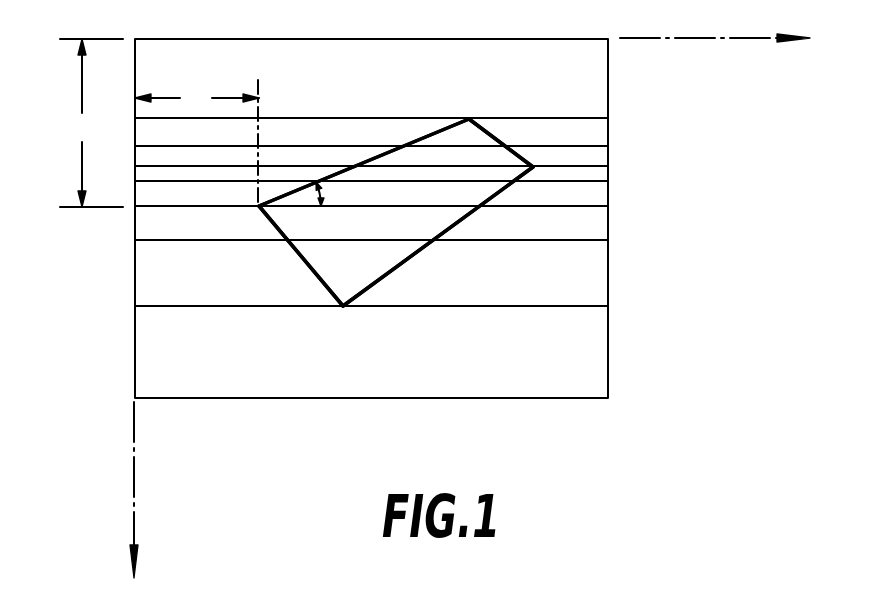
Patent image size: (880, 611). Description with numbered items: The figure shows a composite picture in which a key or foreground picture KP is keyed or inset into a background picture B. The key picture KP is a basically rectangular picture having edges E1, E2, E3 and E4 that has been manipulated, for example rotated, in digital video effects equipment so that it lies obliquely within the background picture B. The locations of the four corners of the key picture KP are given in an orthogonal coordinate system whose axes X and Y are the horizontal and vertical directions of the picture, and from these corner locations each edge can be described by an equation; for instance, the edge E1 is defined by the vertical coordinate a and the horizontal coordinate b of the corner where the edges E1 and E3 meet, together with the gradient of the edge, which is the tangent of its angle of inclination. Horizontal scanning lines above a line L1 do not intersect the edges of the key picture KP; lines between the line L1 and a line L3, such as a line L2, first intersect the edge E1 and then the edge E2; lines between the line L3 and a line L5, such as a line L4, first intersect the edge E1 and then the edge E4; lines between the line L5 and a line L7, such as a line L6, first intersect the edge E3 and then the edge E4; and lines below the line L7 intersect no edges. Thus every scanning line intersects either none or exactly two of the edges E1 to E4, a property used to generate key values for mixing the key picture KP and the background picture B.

The background picture B is at (431, 368).
The line L1 is at (582, 117).
The line L2 is at (573, 145).
The line L3 is at (587, 165).
The line L4 is at (578, 181).
The line L5 is at (573, 207).
The line L6 is at (557, 241).
The line L7 is at (553, 306).
The key picture KP is at (365, 277).
The edge E1 is at (413, 142).
The edge E2 is at (507, 143).
The edge E3 is at (300, 257).
The edge E4 is at (408, 262).
The coordinate a is at (91, 123).
The coordinate b is at (197, 142).
The X axis X is at (718, 21).
The Y axis Y is at (122, 500).